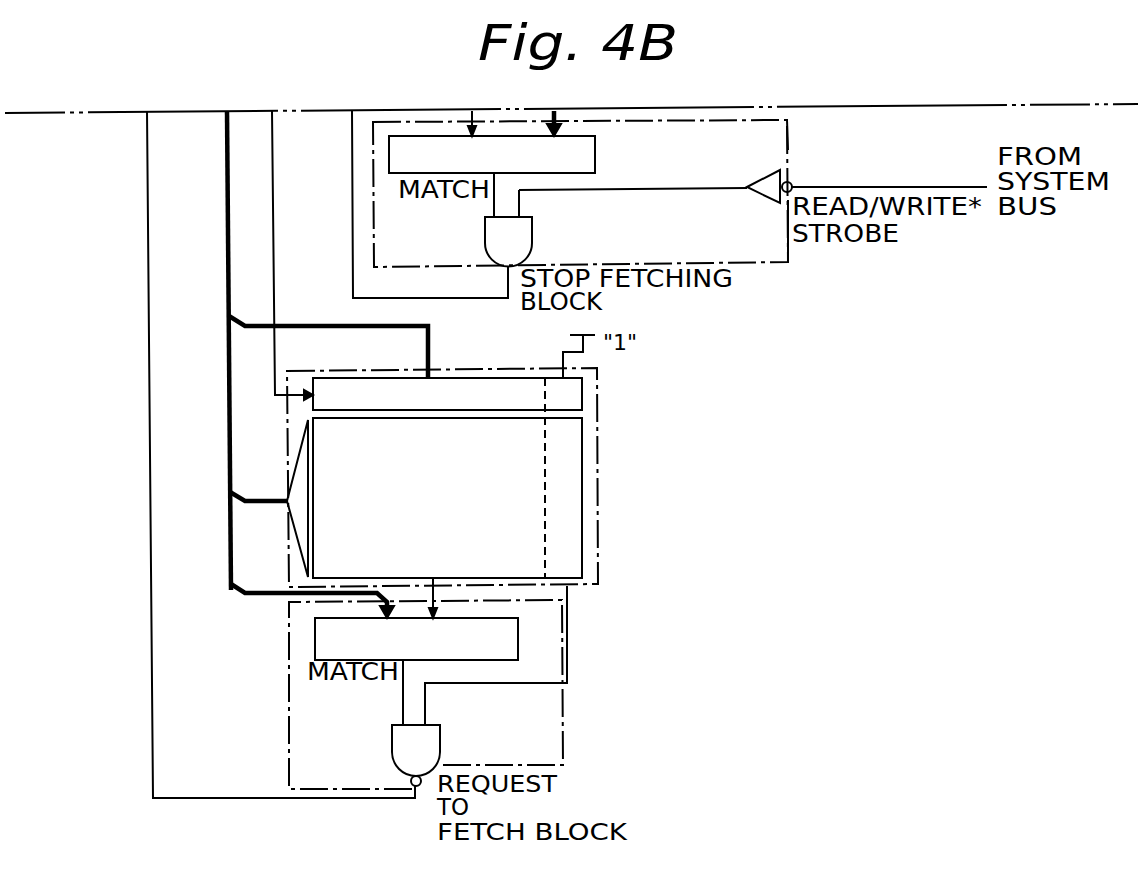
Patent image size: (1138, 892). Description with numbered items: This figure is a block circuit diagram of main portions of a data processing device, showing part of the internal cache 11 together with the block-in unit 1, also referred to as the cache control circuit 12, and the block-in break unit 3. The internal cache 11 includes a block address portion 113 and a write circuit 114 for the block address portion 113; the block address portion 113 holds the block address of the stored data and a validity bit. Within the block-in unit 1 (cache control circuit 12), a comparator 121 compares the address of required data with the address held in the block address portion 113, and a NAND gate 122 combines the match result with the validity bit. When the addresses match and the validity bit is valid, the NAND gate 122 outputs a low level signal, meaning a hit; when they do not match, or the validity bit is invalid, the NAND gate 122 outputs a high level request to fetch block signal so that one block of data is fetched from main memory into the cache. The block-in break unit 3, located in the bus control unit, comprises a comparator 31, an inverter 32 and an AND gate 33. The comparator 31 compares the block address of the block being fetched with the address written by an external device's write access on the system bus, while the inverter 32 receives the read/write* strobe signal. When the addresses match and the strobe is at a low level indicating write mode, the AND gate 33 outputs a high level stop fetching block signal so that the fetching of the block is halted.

The block-in unit 1 is at (474, 687).
The block-in break unit 3 is at (765, 262).
The internal cache 11 is at (597, 452).
The cache control circuit 12 is at (563, 700).
The comparator 31 is at (597, 150).
The inverter 32 is at (776, 170).
The AND gate 33 is at (533, 232).
The block address portion 113 is at (582, 502).
The write circuit 114 is at (582, 392).
The comparator 121 is at (315, 633).
The NAND gate 122 is at (441, 741).